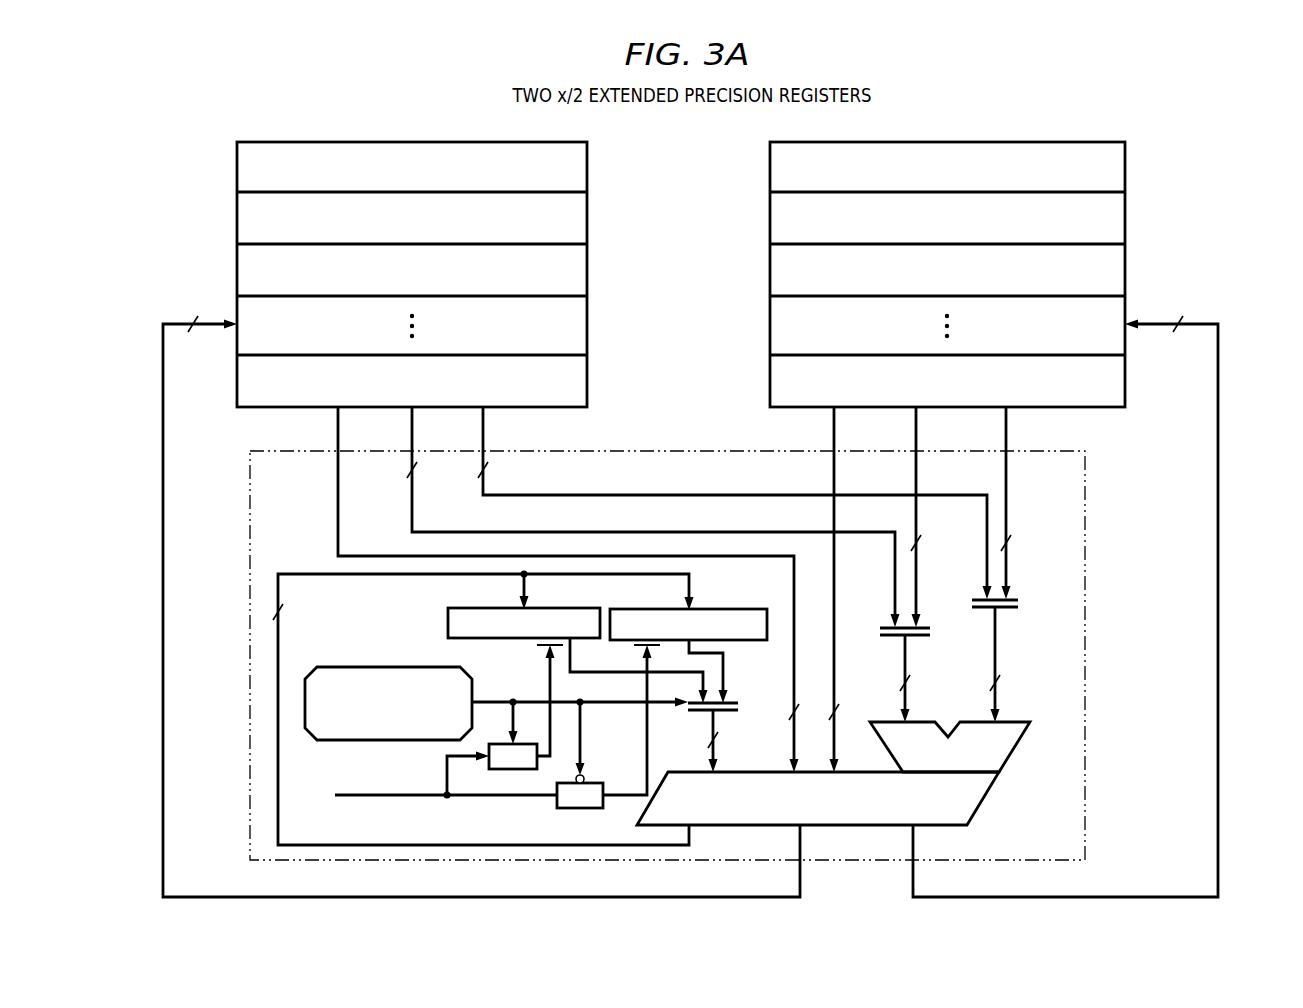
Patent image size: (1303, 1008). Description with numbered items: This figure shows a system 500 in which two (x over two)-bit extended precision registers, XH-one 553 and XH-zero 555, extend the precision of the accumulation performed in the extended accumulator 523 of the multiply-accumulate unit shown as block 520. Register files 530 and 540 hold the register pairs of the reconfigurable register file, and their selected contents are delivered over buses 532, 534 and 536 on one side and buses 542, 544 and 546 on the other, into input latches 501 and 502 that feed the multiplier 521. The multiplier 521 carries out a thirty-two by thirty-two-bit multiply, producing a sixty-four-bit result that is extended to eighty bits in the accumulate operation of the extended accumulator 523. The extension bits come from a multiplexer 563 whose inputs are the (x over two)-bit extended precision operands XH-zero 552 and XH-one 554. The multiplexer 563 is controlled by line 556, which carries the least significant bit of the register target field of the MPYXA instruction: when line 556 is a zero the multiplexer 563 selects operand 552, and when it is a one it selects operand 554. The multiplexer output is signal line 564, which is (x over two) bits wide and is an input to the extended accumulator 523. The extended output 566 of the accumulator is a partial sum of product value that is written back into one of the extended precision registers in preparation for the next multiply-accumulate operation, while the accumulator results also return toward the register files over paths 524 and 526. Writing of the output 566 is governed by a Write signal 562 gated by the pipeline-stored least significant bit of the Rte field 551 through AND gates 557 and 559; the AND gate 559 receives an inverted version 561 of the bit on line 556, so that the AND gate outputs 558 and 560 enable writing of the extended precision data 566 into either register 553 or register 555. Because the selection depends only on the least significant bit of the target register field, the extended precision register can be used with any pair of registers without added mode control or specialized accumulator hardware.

The system 500 is at (186, 146).
The odd register file 530 is at (237, 214).
The even register file 540 is at (770, 214).
The multiply accumulate unit MAU 520 is at (250, 465).
The Ryo register output bus 532 is at (542, 495).
The Rxo register output bus 534 is at (416, 525).
The odd register R(n-1) bus 536 is at (345, 552).
The Rye register output bus 542 is at (1010, 487).
The Rxe register output bus 544 is at (920, 487).
The even register R(n-2) bus 546 is at (838, 487).
The Ry input latch 501 is at (1020, 598).
The Rx input latch 502 is at (884, 642).
The multiplier 521 is at (1012, 755).
The extended accumulator 523 is at (985, 810).
The Rte write-back bus 524 is at (1220, 878).
The Rto write-back bus 526 is at (802, 892).
The Rte field 551 is at (353, 667).
The XH0 extended precision input operand 552 is at (727, 672).
The extended precision register XH1 553 is at (448, 624).
The XH1 extended precision input operand 554 is at (575, 668).
The extended precision register XH0 555 is at (715, 608).
The input control line 556 is at (622, 705).
The AND gate 557 is at (505, 769).
The AND gate output 558 is at (548, 688).
The AND gate 559 is at (557, 800).
The AND gate output 560 is at (626, 799).
The inverted version of LSB 561 is at (588, 780).
The Write (Wr) signal 562 is at (405, 797).
The multiplexer 563 is at (738, 703).
The signal line 564 is at (710, 735).
The extended output 566 is at (450, 846).